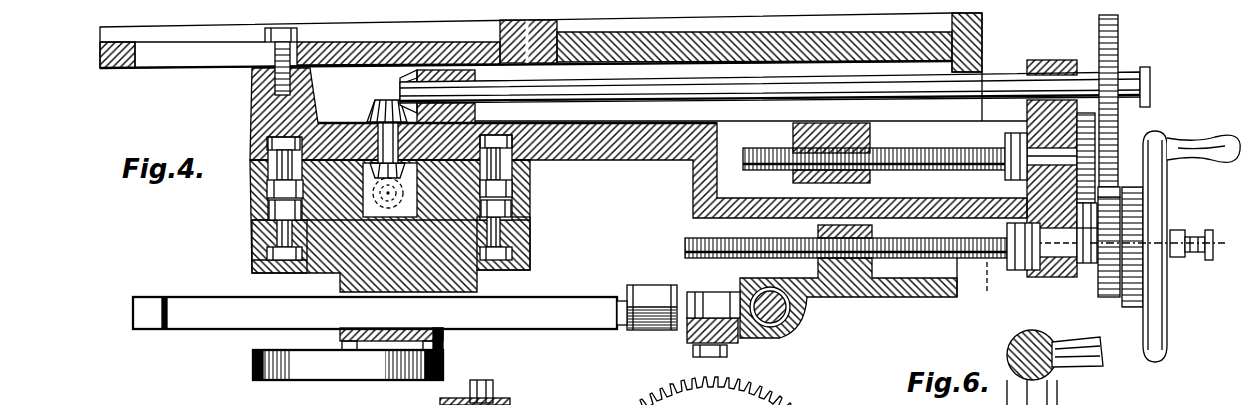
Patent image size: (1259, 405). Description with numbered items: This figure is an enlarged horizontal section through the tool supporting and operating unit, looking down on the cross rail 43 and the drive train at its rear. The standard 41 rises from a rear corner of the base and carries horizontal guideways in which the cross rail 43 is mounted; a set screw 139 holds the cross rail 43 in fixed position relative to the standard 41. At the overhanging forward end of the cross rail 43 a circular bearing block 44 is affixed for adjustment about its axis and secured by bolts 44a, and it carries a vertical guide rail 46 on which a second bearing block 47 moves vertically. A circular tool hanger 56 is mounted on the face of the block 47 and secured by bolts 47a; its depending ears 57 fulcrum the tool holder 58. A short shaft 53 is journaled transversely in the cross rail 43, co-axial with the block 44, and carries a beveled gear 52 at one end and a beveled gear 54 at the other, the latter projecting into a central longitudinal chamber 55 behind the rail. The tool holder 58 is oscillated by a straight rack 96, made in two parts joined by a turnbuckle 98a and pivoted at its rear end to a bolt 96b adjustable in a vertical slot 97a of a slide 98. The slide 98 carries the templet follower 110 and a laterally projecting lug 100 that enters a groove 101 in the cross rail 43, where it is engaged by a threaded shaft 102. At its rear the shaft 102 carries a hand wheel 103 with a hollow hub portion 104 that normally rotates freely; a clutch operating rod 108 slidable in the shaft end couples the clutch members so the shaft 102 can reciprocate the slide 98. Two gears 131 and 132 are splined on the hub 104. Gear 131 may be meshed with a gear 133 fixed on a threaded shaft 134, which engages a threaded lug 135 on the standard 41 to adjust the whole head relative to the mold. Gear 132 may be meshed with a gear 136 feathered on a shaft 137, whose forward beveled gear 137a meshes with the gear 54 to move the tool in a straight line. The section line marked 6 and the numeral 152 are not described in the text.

The standard 41 is at (983, 30).
The cross rail 43 is at (648, 161).
The circular bearing block 44 is at (267, 187).
The bolts 44a is at (545, 186).
The vertical guide rail 46 is at (390, 228).
The second bearing block 47 is at (252, 231).
The bolts 47a is at (548, 226).
The beveled gear 52 is at (390, 190).
The short shaft 53 is at (470, 115).
The beveled gear 54 is at (370, 118).
The central longitudinal chamber 55 is at (751, 99).
The circular tool hanger 56 is at (348, 354).
The depending ears 57 is at (253, 373).
The tool holder 58 is at (252, 265).
The straight rack 96 is at (216, 294).
The bolt 96b is at (697, 290).
The vertical slot 97a is at (688, 340).
The slide 98 is at (876, 298).
The turnbuckle 98a is at (650, 331).
The laterally projecting lug 100 is at (873, 268).
The groove 101 is at (967, 275).
The threaded shaft 102 is at (944, 239).
The hand wheel 103 is at (1170, 297).
The hollow hub portion 104 is at (1077, 222).
The clutch operating rod 108 is at (1212, 262).
The templet follower 110 is at (770, 326).
The gear 131 is at (1098, 292).
The gear 132 is at (1133, 309).
The gear 133 is at (1097, 119).
The threaded shaft 134 is at (915, 172).
The threaded lug 135 is at (872, 135).
The gear 136 is at (1120, 43).
The shaft 137 is at (817, 78).
The beveled gear 137a is at (400, 88).
The set screw 139 is at (268, 53).
The collar 152 is at (1127, 188).
The section line 6- 6 is at (1112, 277).